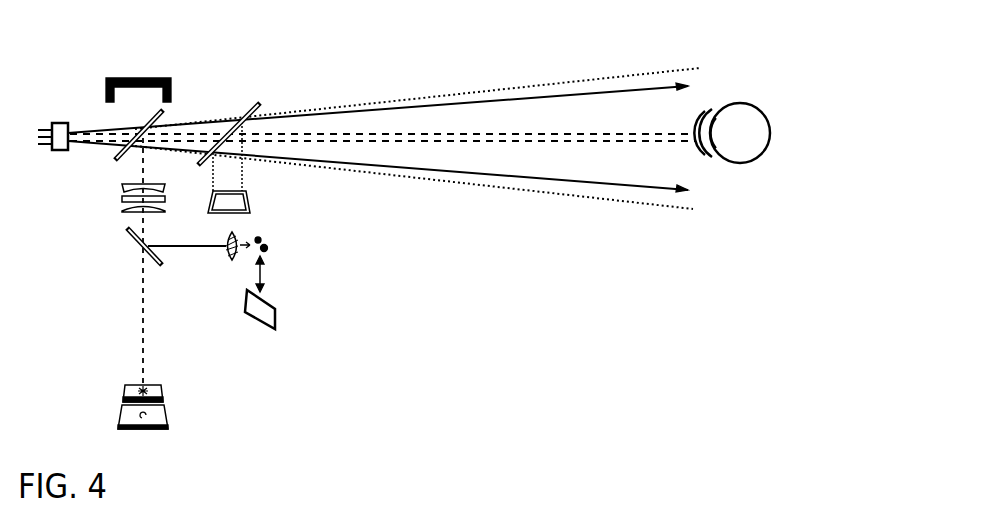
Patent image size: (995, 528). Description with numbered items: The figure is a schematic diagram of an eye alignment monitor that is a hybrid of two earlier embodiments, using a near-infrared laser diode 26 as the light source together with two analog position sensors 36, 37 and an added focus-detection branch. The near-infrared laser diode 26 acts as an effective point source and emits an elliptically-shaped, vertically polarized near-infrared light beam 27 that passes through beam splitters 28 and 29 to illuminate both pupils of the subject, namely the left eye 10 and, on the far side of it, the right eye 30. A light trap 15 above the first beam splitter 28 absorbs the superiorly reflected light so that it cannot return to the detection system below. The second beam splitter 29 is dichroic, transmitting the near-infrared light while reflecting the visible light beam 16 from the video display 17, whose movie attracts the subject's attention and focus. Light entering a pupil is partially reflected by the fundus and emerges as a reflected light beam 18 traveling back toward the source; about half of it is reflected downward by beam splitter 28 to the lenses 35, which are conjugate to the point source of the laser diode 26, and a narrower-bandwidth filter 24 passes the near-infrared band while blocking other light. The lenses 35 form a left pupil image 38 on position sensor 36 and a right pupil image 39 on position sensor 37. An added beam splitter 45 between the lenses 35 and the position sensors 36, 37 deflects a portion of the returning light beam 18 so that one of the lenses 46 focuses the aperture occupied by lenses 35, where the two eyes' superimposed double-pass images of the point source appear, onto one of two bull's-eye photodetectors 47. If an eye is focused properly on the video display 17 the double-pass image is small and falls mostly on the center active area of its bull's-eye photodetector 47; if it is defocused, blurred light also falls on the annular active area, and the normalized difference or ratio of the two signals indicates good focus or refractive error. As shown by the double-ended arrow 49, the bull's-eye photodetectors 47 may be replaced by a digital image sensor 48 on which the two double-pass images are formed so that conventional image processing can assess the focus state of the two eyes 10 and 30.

The left eye 10 is at (745, 165).
The light trap 15 is at (143, 77).
The visible light beam 16 is at (231, 178).
The video display 17 is at (251, 205).
The reflected light beam 18 is at (600, 138).
The narrower-bandwidth filter 24 is at (165, 206).
The near-infrared laser diode 26 is at (57, 152).
The near-infrared light beam 27 is at (95, 141).
The beam splitter 28 is at (168, 110).
The beam splitter 29 is at (262, 101).
The right eye 30 is at (709, 162).
The lenses 35 is at (122, 211).
The position sensor 36 is at (122, 395).
The position sensor 37 is at (122, 420).
The left pupil image 38 is at (148, 393).
The right pupil image 39 is at (148, 418).
The beam splitter 45 is at (128, 240).
The lenses 46 is at (229, 260).
The bull's-eye photodetector 47 is at (268, 243).
The digital image sensor 48 is at (277, 318).
The double-ended arrow 49 is at (265, 279).